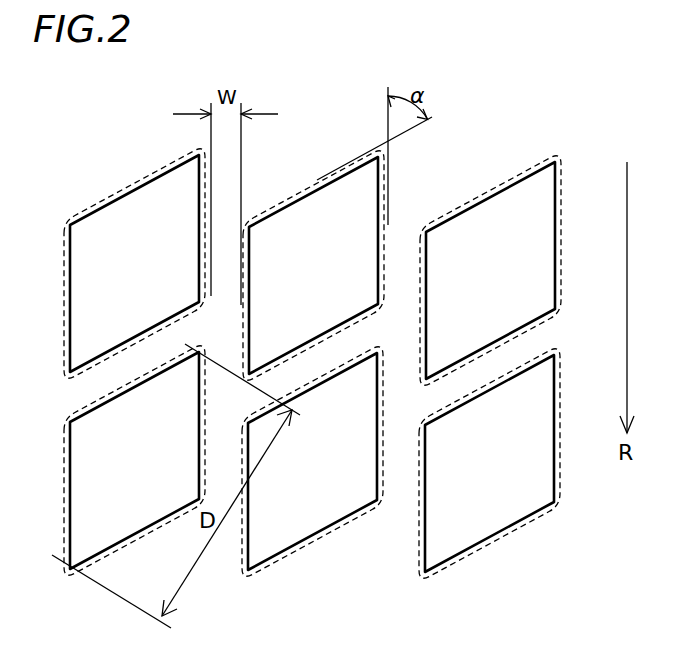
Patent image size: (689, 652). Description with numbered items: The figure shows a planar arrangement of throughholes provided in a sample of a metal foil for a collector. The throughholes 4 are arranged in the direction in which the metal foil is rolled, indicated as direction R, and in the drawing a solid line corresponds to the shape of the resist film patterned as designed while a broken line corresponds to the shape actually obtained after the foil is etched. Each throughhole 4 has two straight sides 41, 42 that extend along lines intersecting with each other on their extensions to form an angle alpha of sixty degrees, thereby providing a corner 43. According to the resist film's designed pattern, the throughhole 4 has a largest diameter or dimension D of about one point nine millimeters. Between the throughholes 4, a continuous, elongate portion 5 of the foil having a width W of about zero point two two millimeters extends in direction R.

The throughhole 4 is at (126, 217).
The straight side 41 is at (300, 190).
The straight side 42 is at (392, 243).
The corner 43 is at (363, 180).
The continuous, elongate portion 5 is at (225, 458).